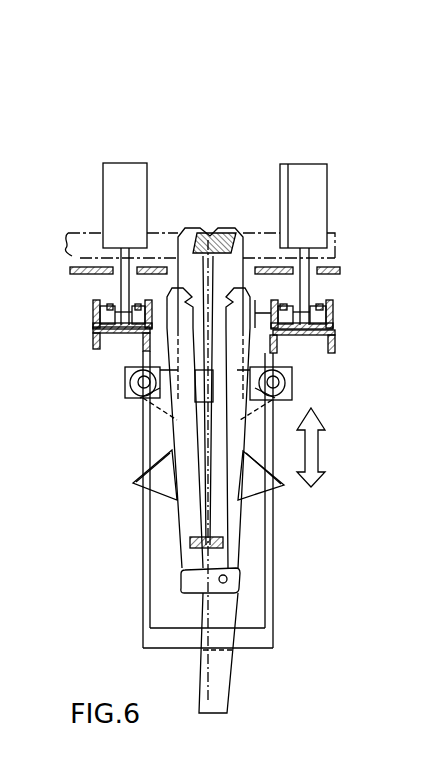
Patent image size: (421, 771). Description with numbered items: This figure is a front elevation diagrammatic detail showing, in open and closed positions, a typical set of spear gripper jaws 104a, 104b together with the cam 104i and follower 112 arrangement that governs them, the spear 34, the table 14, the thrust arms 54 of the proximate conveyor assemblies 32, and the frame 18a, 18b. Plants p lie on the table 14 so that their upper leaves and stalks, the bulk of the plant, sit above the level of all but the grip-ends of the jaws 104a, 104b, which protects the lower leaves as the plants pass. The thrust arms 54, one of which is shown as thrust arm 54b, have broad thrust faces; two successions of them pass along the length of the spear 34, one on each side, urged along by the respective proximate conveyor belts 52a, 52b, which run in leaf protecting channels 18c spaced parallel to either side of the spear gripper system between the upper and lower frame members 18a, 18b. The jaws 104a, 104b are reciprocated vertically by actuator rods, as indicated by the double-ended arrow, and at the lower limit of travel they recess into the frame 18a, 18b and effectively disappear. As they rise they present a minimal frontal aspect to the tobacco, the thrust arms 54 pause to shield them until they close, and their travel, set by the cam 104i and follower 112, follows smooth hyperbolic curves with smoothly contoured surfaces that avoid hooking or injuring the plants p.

The spear 34 is at (208, 226).
The thrust arms 54 is at (307, 173).
The cylinder body 54b is at (285, 172).
The plants p is at (252, 228).
The table 14 is at (327, 270).
The proximate conveyor belt 52a is at (94, 314).
The proximate conveyor belt 52b is at (308, 315).
The frame member 18a is at (276, 340).
The leaf protecting channel 18c is at (336, 338).
The frame member 18b is at (150, 647).
The proximate conveyor assembly 32 is at (106, 351).
The follower 112 is at (140, 400).
The cam 104i is at (150, 462).
The jaw 104b is at (187, 528).
The jaw 104a is at (235, 518).